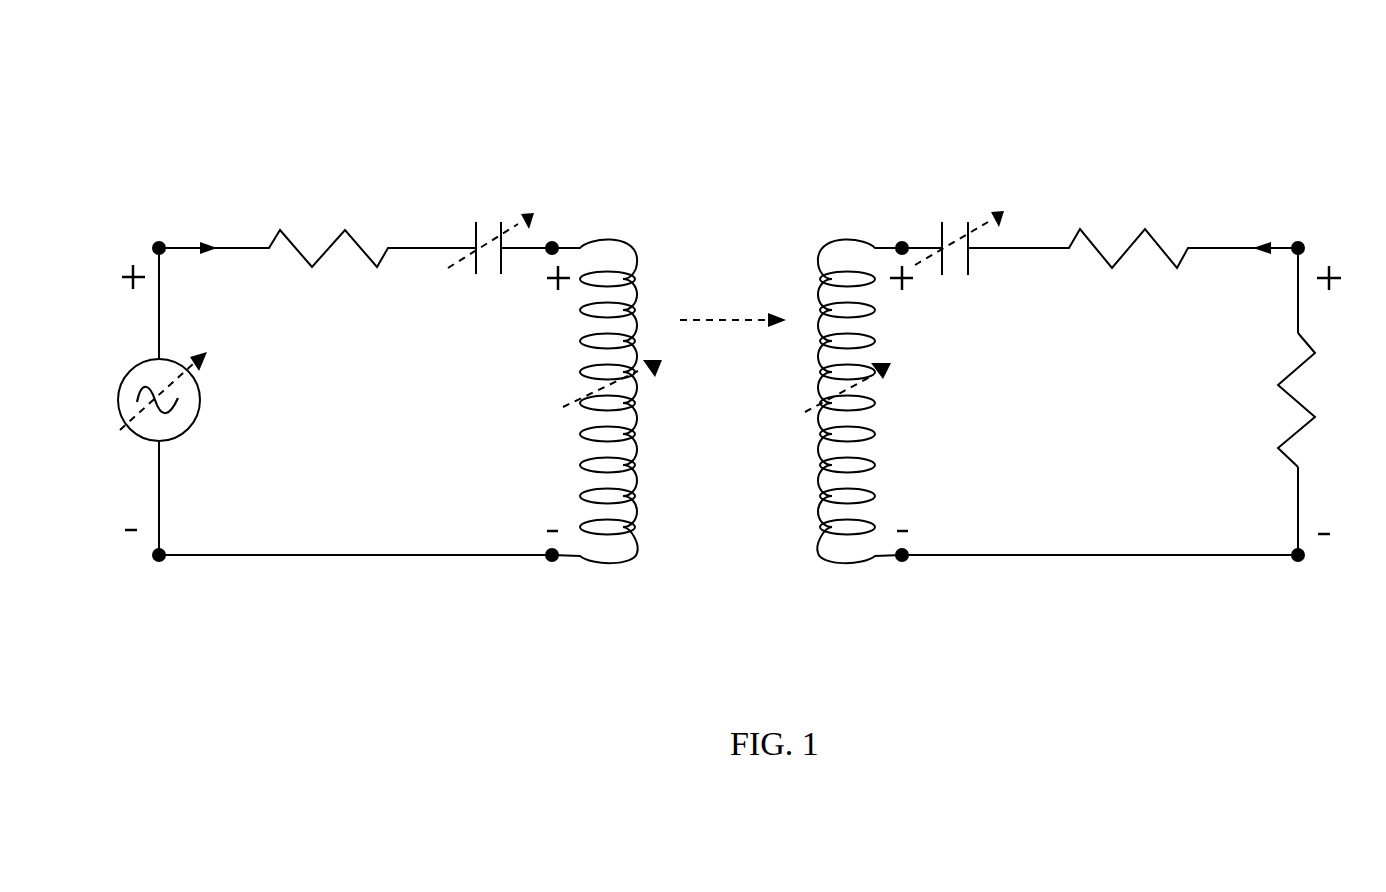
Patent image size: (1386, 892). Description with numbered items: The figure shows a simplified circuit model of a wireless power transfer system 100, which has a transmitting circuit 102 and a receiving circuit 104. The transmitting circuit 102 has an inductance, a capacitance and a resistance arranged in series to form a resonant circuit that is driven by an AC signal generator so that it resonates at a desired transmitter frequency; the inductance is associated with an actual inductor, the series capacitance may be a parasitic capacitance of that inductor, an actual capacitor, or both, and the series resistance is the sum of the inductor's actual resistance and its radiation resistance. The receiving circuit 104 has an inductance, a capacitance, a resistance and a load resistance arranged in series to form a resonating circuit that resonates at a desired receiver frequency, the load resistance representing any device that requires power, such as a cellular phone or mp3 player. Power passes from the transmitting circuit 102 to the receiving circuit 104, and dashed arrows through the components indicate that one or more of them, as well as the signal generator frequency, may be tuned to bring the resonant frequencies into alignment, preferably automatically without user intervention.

The wireless power transfer system 100 is at (1324, 79).
The transmitting circuit 102 is at (384, 414).
The receiving circuit 104 is at (1124, 414).